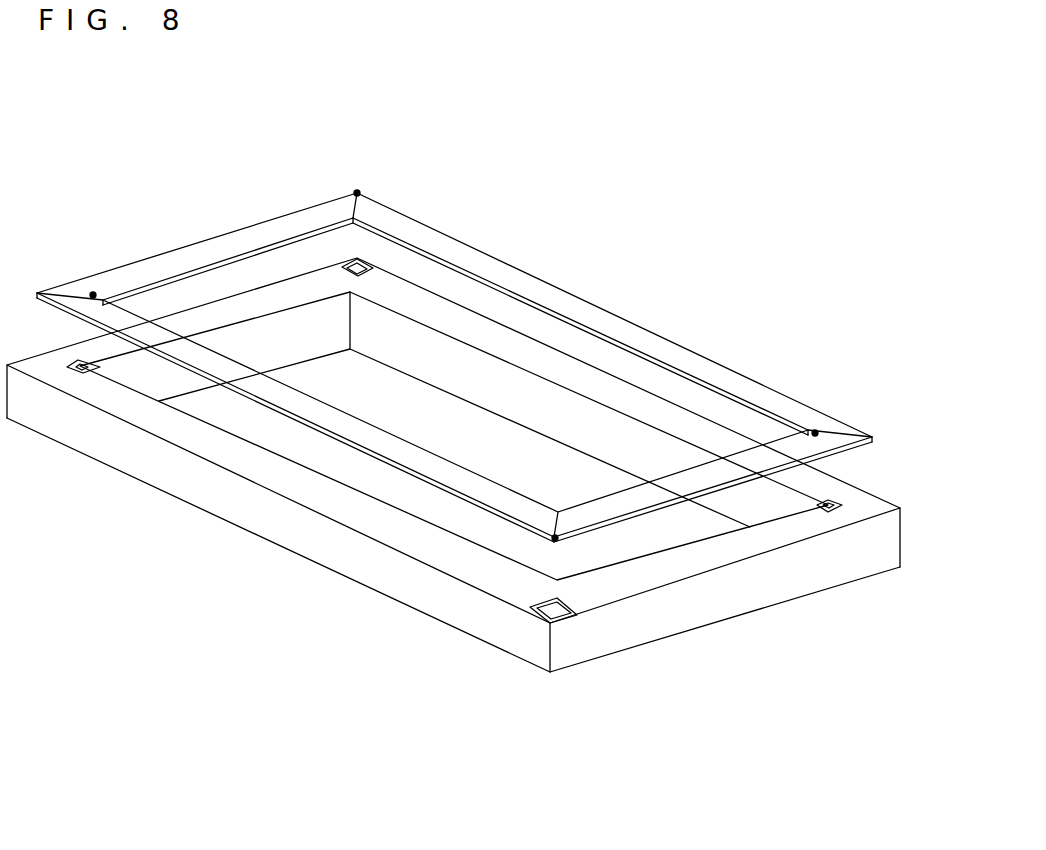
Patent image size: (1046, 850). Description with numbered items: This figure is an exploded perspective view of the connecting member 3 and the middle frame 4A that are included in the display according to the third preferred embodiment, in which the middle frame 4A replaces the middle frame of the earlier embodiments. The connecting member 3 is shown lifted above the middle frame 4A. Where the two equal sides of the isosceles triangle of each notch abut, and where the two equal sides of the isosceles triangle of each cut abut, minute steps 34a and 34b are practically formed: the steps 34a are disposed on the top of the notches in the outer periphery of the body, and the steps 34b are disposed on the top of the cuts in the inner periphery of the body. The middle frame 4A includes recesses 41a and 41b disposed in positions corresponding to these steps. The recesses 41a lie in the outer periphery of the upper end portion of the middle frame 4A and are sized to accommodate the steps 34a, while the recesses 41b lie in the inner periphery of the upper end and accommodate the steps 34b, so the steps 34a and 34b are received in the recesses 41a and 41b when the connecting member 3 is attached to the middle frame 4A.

The connecting member 3 is at (556, 291).
The middle frame 4A is at (318, 545).
The step 34a is at (357, 192).
The step 34b is at (93, 294).
The recess 41a is at (358, 265).
The recess 41b is at (72, 362).